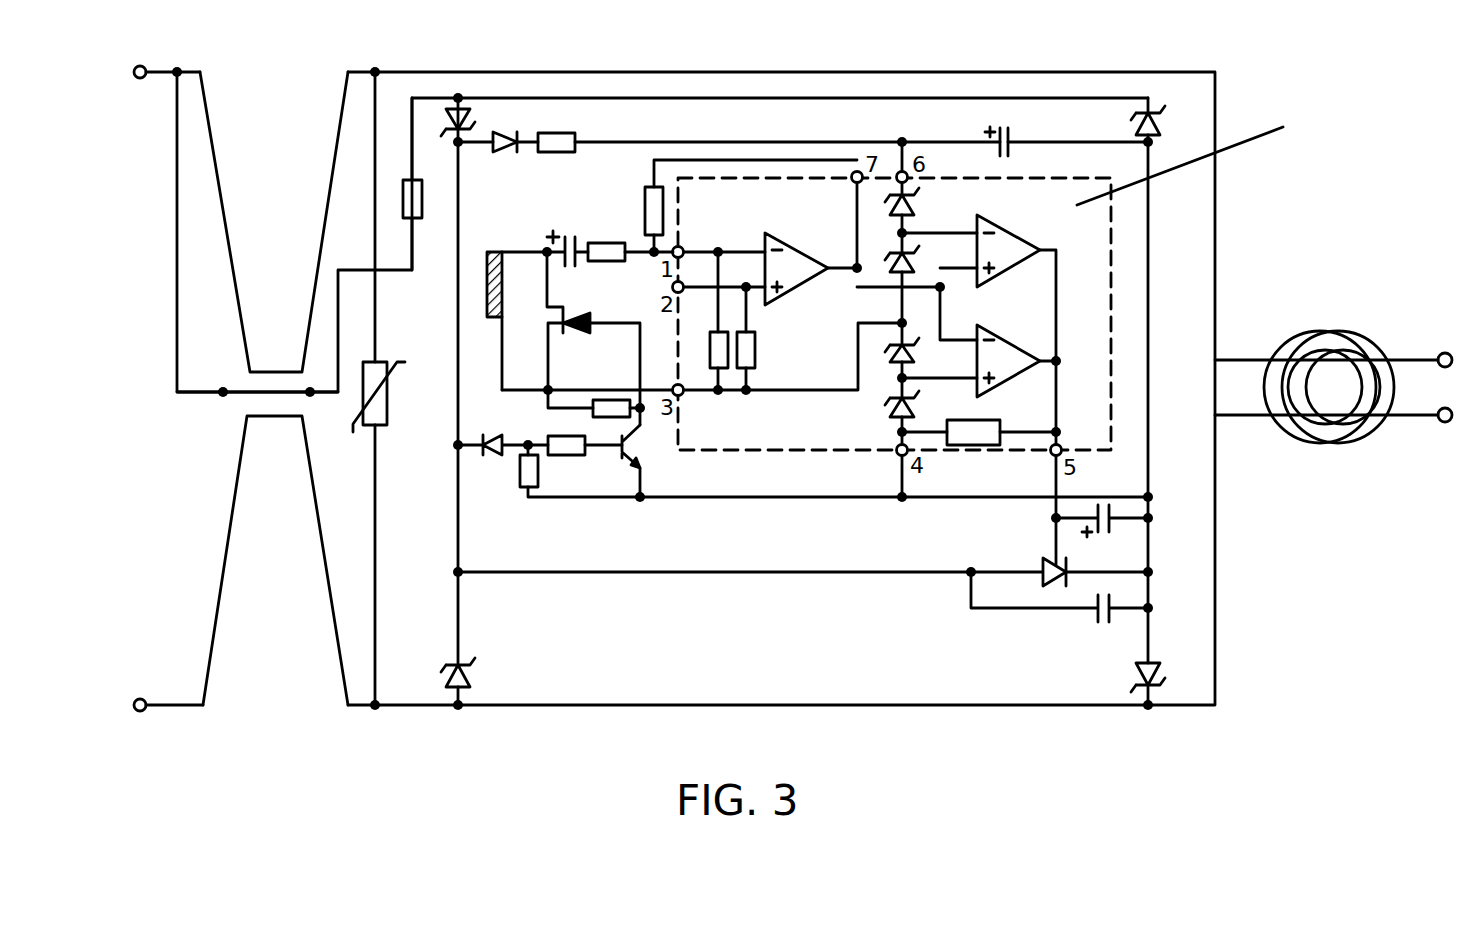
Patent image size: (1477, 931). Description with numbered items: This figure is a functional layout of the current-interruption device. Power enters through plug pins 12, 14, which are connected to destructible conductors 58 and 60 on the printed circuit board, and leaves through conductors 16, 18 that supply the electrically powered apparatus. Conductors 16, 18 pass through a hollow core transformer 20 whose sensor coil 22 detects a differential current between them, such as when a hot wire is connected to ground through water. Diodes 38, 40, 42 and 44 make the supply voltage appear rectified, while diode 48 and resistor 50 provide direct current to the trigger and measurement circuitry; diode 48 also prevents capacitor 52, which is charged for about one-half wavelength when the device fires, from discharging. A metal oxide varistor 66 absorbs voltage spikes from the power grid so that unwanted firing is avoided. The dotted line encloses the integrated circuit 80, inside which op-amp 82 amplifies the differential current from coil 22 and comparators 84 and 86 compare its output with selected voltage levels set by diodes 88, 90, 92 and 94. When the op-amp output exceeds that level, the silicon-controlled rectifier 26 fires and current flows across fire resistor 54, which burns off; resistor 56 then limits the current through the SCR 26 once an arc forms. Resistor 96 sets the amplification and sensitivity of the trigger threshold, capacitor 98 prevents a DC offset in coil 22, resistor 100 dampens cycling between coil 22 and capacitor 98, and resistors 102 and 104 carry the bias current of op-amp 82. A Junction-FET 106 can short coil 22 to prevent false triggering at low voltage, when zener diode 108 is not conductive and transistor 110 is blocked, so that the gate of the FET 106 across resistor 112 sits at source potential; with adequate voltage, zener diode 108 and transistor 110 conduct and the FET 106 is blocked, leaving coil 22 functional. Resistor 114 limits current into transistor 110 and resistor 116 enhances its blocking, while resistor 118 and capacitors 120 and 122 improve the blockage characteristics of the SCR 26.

The plug pin 12 is at (144, 59).
The plug pin 14 is at (146, 721).
The conductor 16 is at (1444, 344).
The conductor 18 is at (1444, 430).
The hollow core transformer 20 is at (1326, 376).
The sensor coil 22 is at (483, 321).
The silicon-controlled rectifier 26 is at (803, 562).
The diode 38 is at (471, 117).
The diode 40 is at (475, 672).
The diode 42 is at (1131, 123).
The diode 44 is at (1129, 674).
The diode 48 is at (506, 160).
The resistor 50 is at (558, 161).
The capacitor 52 is at (1015, 135).
The fire resistor 54 is at (257, 406).
The resistor 56 is at (425, 184).
The destructible conductor 58 is at (274, 222).
The destructible conductor 60 is at (275, 560).
The metal oxide varistor 66 is at (392, 388).
The integrated circuit 80 is at (1261, 156).
The op-amp 82 is at (797, 265).
The comparator 84 is at (1010, 246).
The comparator 86 is at (1010, 356).
The diode 88 is at (887, 204).
The diode 90 is at (888, 263).
The diode 92 is at (887, 351).
The diode 94 is at (887, 403).
The resistor 96 is at (732, 208).
The capacitor 98 is at (545, 232).
The resistor 100 is at (630, 266).
The resistor 102 is at (683, 321).
The resistor 104 is at (774, 338).
The Junction-FET 106 is at (593, 338).
The zener diode 108 is at (500, 427).
The transistor 110 is at (654, 463).
The resistor 112 is at (596, 389).
The resistor 114 is at (585, 459).
The resistor 116 is at (831, 485).
The resistor 118 is at (981, 417).
The capacitor 120 is at (1102, 534).
The capacitor 122 is at (1062, 607).